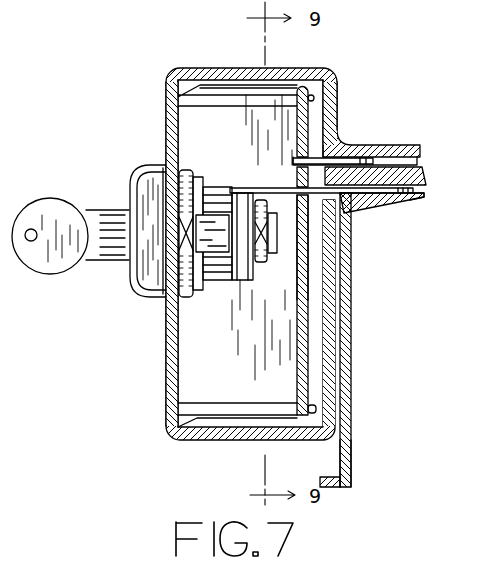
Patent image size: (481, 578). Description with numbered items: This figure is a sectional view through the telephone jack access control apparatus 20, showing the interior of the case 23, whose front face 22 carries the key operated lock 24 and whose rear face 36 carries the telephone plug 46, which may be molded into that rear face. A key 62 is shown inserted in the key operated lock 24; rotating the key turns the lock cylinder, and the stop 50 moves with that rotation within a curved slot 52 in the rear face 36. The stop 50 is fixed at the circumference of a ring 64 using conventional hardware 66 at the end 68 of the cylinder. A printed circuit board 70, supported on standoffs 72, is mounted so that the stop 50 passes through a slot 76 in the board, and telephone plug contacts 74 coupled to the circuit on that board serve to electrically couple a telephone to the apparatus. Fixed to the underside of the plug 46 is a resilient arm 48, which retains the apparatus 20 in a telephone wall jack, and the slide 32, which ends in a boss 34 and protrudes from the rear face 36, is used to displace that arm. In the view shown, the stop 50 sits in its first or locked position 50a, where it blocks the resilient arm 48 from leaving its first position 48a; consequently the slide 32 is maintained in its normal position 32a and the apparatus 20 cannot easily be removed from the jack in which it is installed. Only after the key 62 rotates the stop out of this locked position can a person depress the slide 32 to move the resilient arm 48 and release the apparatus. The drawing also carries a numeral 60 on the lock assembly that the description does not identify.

The telephone jack access control apparatus 20 is at (160, 45).
The front face 22 is at (168, 400).
The case 23 is at (167, 97).
The key operated lock 24 is at (142, 296).
The slide 32 is at (349, 424).
The normal position of slide 32a is at (349, 456).
The boss 34 is at (336, 488).
The rear face 36 is at (335, 98).
The telephone plug 46 is at (426, 187).
The resilient arm 48 is at (365, 207).
The first position of resilient arm 48a is at (392, 204).
The stop 50 is at (238, 173).
The locked position of stop 50a is at (400, 190).
The curved slot 52 is at (342, 213).
The knurled collar 60 is at (183, 308).
The key 62 is at (62, 196).
The ring 64 is at (245, 278).
The conventional hardware 66 is at (257, 262).
The end of cylinder 68 is at (272, 238).
The printed circuit board 70 is at (296, 376).
The standoffs 72 is at (222, 92).
The telephone plug contacts 74 is at (393, 155).
The slot 76 is at (301, 197).